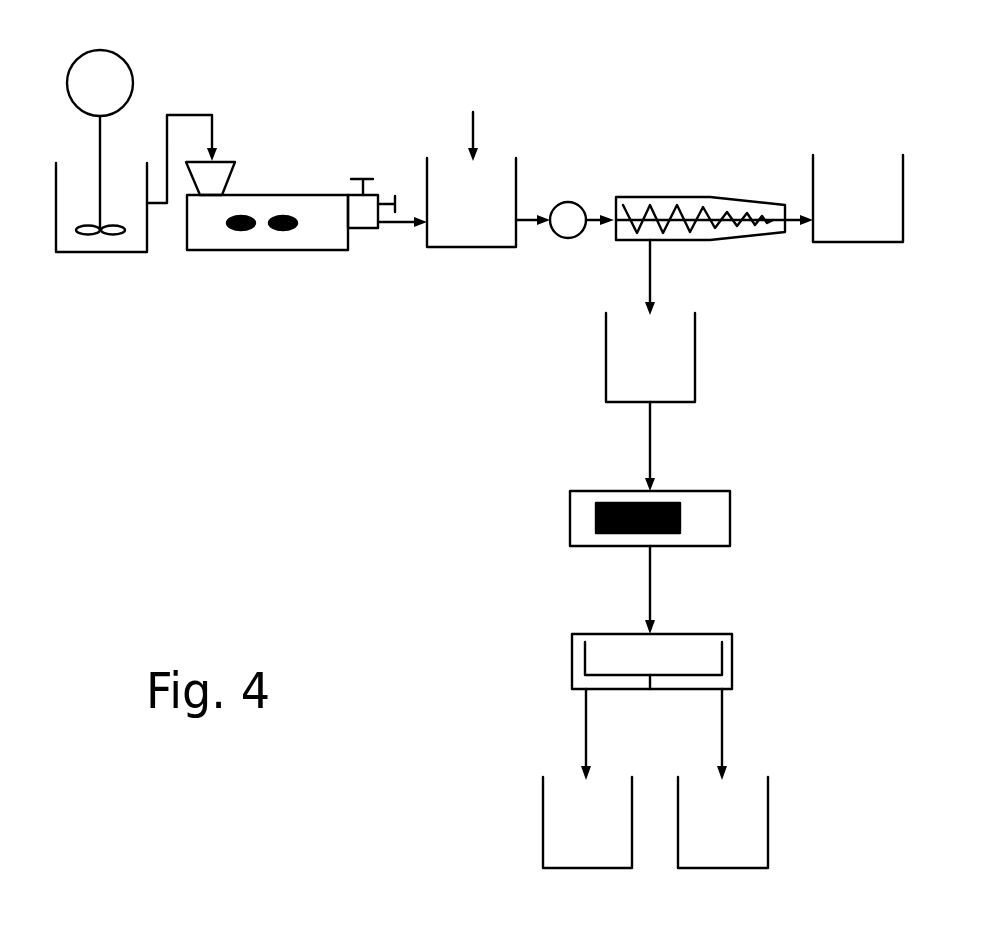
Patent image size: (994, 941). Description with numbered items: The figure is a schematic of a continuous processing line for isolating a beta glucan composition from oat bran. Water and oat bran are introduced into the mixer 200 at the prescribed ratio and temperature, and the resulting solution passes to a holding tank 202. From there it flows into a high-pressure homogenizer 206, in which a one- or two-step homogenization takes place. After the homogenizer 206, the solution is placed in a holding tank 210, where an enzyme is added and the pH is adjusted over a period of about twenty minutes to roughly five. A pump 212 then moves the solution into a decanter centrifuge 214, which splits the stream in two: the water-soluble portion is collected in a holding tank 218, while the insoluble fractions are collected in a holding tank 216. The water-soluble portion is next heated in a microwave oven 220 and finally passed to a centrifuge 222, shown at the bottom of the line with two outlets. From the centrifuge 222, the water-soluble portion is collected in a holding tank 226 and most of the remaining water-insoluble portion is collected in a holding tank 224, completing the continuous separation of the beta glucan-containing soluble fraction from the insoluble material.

The mixer 200 is at (134, 89).
The holding tank 202 is at (113, 252).
The high-pressure homogenizer 206 is at (260, 250).
The holding tank 210 is at (475, 247).
The pump 212 is at (572, 203).
The decanter centrifuge 214 is at (668, 198).
The holding tank 216 is at (867, 242).
The holding tank 218 is at (695, 370).
The microwave oven 220 is at (730, 515).
The centrifuge 222 is at (732, 662).
The holding tank 224 is at (768, 810).
The holding tank 226 is at (543, 832).